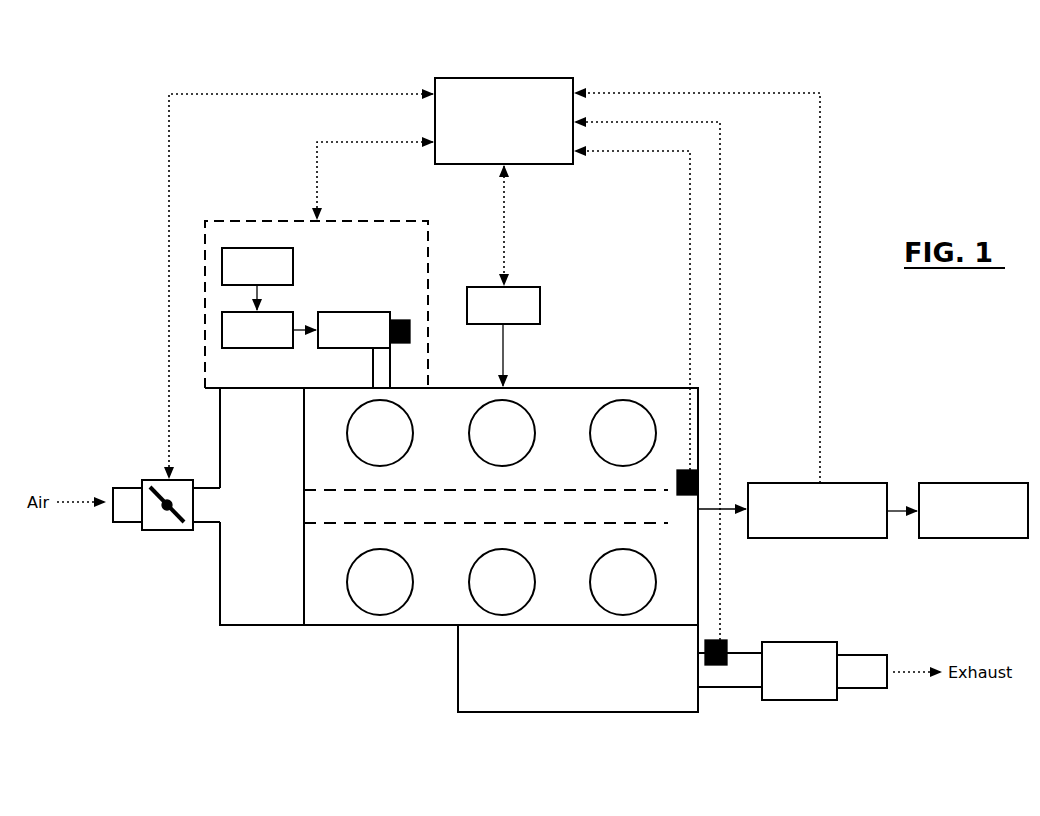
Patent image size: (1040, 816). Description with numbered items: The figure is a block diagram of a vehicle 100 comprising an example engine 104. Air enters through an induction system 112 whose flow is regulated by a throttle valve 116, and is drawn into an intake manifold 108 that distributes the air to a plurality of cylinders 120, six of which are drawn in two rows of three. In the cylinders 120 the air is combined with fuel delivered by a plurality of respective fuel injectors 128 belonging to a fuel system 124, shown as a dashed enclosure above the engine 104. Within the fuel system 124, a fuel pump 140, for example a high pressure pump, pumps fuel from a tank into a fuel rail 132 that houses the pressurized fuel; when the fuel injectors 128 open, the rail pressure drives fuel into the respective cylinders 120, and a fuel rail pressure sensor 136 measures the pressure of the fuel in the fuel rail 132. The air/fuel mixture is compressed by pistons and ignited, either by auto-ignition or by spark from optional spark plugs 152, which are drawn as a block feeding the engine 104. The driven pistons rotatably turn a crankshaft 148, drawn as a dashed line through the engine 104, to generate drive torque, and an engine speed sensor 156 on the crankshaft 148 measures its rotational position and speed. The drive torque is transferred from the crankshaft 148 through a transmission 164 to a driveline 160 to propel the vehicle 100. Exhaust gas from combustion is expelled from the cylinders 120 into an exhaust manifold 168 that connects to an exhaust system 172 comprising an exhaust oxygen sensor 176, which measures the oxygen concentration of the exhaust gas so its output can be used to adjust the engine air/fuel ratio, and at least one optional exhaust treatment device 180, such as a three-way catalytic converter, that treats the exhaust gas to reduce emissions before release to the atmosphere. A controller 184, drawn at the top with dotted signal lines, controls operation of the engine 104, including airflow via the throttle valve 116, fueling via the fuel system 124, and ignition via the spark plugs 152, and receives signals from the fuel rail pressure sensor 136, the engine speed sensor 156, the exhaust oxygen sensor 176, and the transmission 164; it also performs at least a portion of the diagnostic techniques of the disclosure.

The vehicle 100 is at (152, 720).
The engine 104 is at (368, 626).
The intake manifold 108 is at (258, 626).
The induction system 112 is at (127, 488).
The throttle valve 116 is at (167, 531).
The cylinders 120 is at (346, 584).
The fuel system 124 is at (257, 221).
The fuel injectors 128 is at (373, 370).
The fuel rail 132 is at (352, 312).
The fuel rail pressure sensor 136 is at (290, 312).
The fuel pump 140 is at (294, 265).
The crankshaft 148 is at (486, 506).
The spark plugs 152 is at (541, 305).
The engine speed sensor 156 is at (690, 496).
The driveline 160 is at (975, 539).
The transmission 164 is at (818, 539).
The exhaust manifold 168 is at (577, 713).
The exhaust system 172 is at (859, 689).
The exhaust oxygen sensor 176 is at (717, 667).
The exhaust treatment device 180 is at (799, 701).
The controller 184 is at (504, 78).